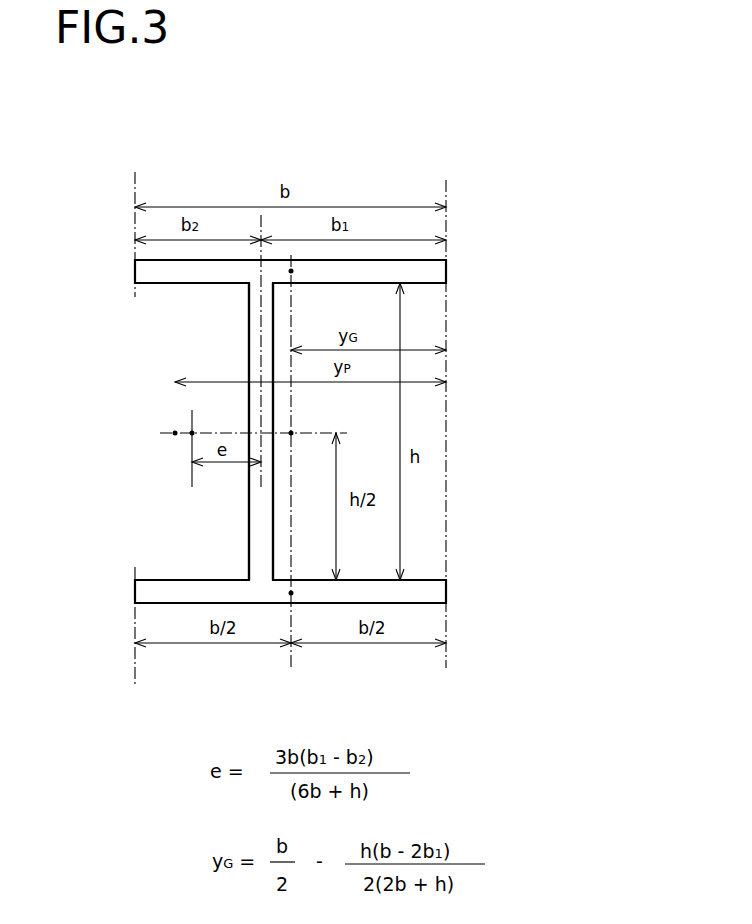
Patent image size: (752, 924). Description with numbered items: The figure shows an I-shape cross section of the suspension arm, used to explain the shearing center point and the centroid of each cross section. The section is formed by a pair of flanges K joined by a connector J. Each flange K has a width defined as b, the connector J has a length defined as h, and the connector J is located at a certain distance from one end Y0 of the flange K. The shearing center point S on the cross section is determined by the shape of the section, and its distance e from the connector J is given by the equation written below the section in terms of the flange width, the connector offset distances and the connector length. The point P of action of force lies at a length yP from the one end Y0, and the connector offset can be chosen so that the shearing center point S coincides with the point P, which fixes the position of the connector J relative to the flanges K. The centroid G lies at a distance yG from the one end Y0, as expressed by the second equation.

The flange K is at (437, 273).
The connector J is at (252, 337).
The one end of the flange Y0 is at (442, 407).
The centroid G is at (286, 461).
The point of action P is at (175, 372).
The shearing center point S is at (198, 448).